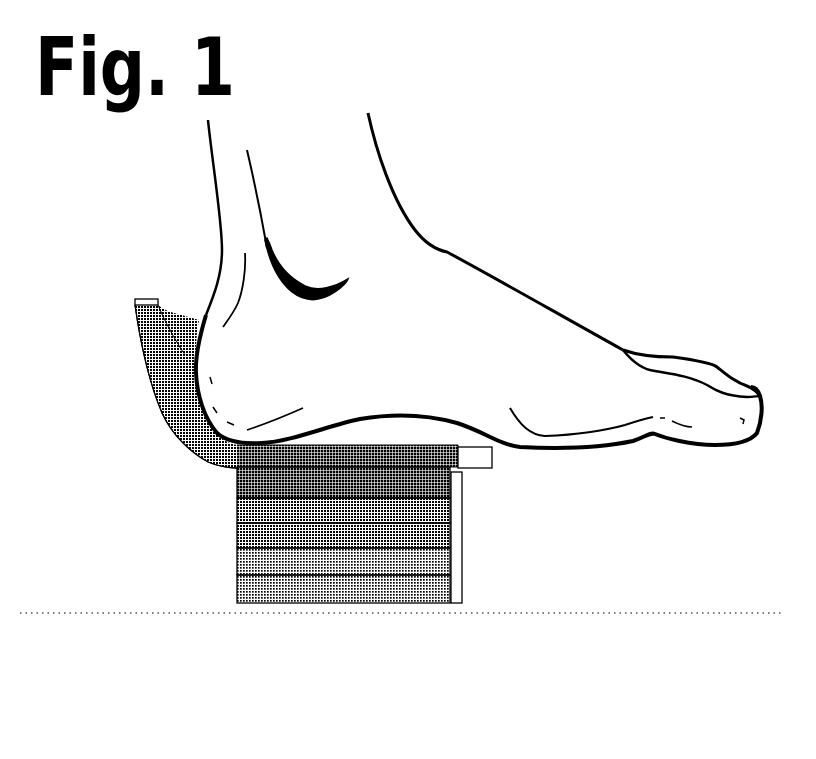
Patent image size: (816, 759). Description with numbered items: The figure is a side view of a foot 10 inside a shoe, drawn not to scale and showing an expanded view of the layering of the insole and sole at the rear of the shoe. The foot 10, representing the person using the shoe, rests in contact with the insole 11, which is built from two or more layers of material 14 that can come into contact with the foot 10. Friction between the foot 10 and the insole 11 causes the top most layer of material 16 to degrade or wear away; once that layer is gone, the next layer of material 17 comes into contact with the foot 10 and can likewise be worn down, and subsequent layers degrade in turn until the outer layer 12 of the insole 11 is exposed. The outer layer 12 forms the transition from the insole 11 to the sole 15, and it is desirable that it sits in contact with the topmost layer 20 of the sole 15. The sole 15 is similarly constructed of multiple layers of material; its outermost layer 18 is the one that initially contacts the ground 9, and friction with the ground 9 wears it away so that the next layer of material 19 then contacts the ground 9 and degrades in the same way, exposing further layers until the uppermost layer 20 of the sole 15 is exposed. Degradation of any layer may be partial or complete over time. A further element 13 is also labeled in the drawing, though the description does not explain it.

The ground 9 is at (73, 613).
The foot 10 is at (235, 261).
The insole 11 is at (145, 299).
The outer layer 12 is at (158, 413).
The support block 13 is at (237, 509).
The layers of material 14 is at (492, 457).
The sole 15 is at (462, 600).
The top most layer of material 16 is at (347, 445).
The next layer of material 17 is at (148, 357).
The outermost layer 18 is at (237, 593).
The next layer of material 19 is at (237, 565).
The topmost layer 20 is at (237, 484).